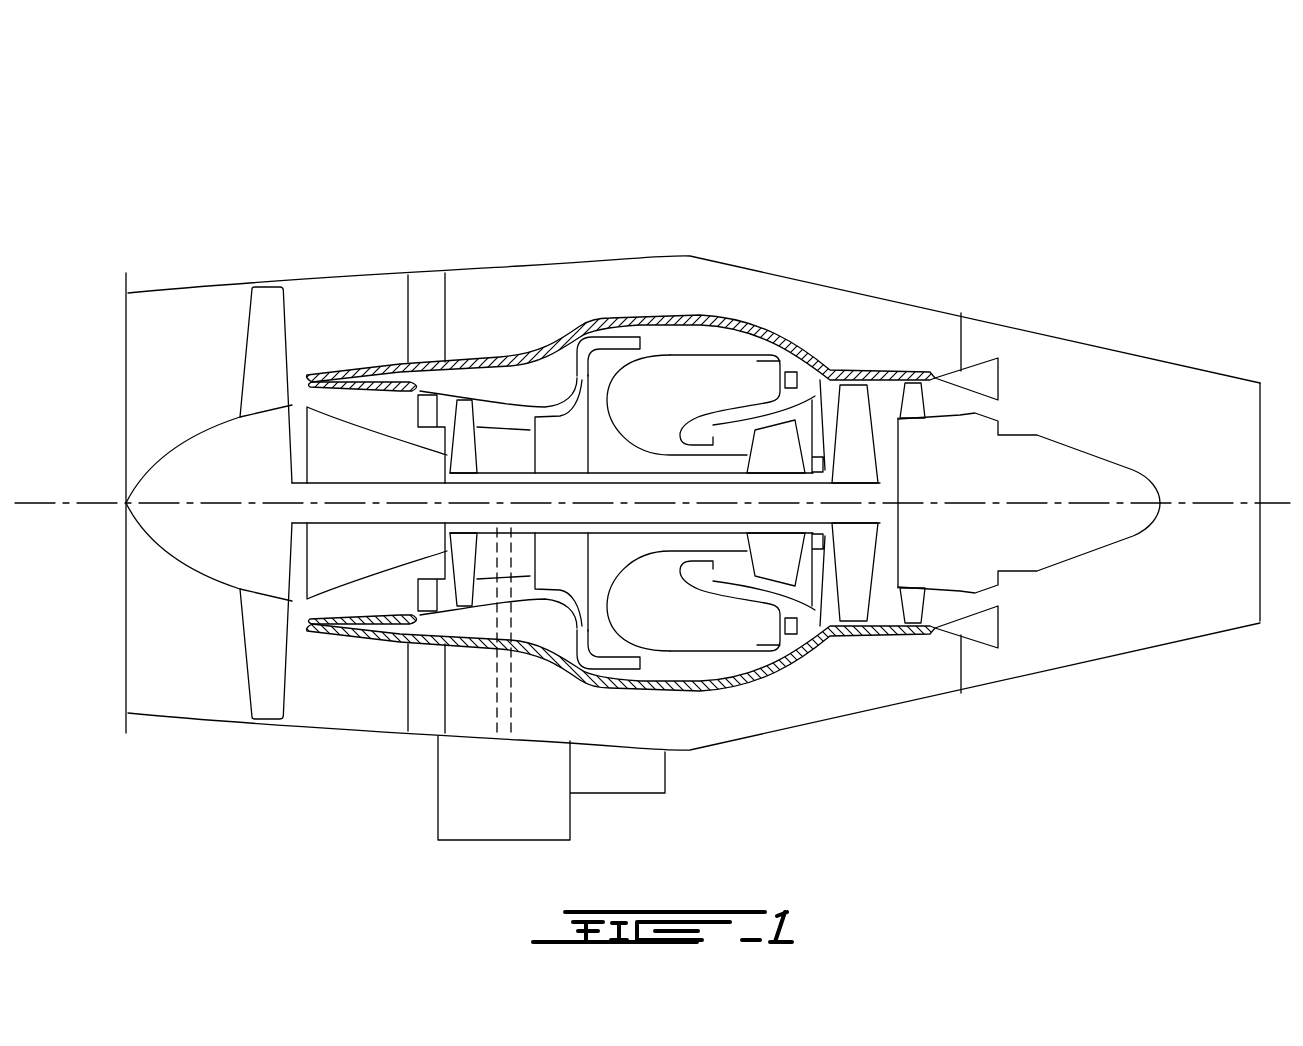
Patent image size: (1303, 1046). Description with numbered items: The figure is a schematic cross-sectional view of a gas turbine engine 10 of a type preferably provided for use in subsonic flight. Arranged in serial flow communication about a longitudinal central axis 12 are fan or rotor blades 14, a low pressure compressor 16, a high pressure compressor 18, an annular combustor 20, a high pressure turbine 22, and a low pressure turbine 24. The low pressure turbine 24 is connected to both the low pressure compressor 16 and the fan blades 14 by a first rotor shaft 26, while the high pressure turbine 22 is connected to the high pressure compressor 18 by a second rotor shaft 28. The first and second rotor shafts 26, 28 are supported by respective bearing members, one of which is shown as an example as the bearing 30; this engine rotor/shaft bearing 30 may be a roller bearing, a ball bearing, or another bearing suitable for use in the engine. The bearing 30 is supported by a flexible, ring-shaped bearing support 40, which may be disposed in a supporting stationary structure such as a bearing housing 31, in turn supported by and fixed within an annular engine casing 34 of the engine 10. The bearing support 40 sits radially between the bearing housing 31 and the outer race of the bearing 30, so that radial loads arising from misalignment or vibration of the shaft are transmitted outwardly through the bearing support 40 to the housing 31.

The gas turbine engine 10 is at (845, 172).
The longitudinal central axis 12 is at (183, 502).
The fan or rotor blades 14 is at (263, 643).
The low pressure compressor 16 is at (447, 457).
The high pressure compressor 18 is at (572, 562).
The annular combustor 20 is at (715, 380).
The high pressure turbine 22 is at (775, 562).
The low pressure turbine 24 is at (845, 375).
The first rotor shaft 26 is at (663, 523).
The second rotor shaft 28 is at (612, 475).
The bearing 30 is at (818, 537).
The bearing housing 31 is at (818, 600).
The annular engine casing 34 is at (656, 318).
The bearing support 40 is at (852, 400).